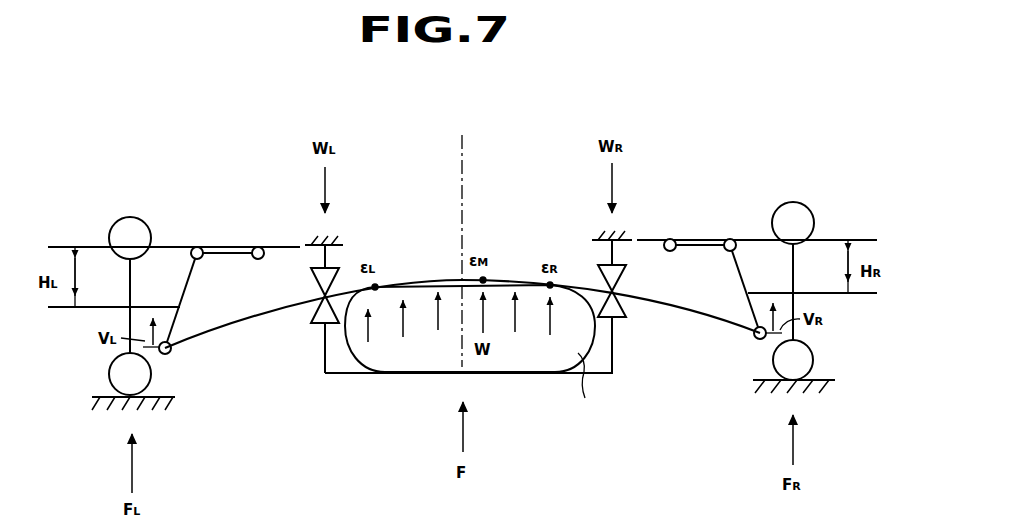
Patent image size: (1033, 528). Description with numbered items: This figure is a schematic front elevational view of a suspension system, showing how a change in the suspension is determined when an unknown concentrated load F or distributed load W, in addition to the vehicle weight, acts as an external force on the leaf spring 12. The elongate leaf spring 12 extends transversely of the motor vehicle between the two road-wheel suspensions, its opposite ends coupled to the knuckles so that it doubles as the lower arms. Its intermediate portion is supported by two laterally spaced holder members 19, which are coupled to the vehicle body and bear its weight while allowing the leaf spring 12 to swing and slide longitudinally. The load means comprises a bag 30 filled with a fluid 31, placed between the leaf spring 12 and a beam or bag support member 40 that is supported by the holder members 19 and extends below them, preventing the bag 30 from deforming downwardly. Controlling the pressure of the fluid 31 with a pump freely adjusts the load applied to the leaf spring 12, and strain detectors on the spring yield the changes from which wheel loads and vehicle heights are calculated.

The leaf spring 12 is at (682, 308).
The holder member 19 is at (311, 314).
The bag 30 is at (602, 385).
The fluid 31 is at (574, 334).
The bag support member 40 is at (558, 374).